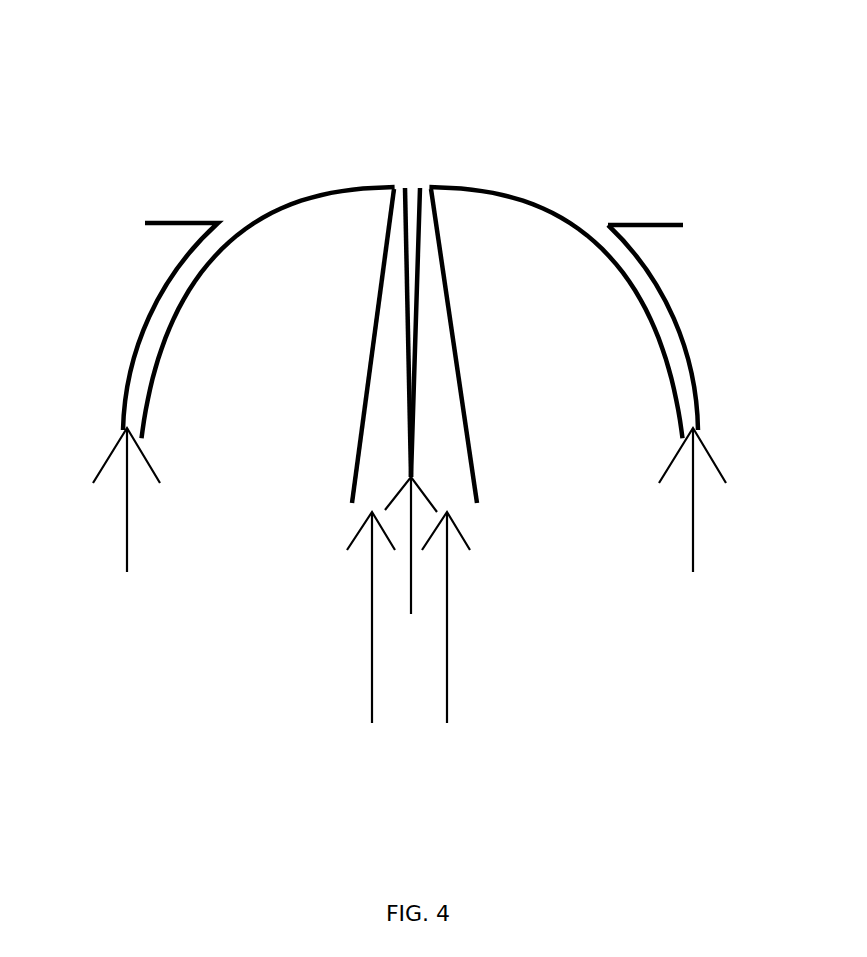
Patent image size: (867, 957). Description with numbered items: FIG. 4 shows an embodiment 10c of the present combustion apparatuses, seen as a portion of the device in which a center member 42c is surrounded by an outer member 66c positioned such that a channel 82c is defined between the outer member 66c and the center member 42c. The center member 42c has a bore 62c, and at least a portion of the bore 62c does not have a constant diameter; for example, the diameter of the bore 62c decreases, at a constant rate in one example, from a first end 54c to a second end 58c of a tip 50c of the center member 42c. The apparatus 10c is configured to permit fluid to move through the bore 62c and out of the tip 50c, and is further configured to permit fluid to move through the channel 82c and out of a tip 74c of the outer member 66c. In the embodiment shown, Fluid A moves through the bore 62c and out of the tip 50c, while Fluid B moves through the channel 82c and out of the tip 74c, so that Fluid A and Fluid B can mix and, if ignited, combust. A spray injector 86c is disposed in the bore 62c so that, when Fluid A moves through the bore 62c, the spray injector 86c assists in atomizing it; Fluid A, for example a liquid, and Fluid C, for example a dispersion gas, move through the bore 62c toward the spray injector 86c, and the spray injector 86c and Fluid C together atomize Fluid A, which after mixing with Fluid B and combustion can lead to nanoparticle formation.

The combustion apparatus 10c is at (447, 66).
The second end 58c is at (283, 142).
The tip 50c is at (182, 295).
The center member 42c is at (675, 403).
The tip 74c is at (150, 303).
The outer member 66c is at (675, 320).
The channel 82c is at (672, 363).
The bore 62c is at (428, 332).
The spray injector 86c is at (411, 200).
The first end 54c is at (170, 442).
The Fluid A is at (411, 574).
The Fluid B is at (692, 533).
The Fluid C is at (411, 652).